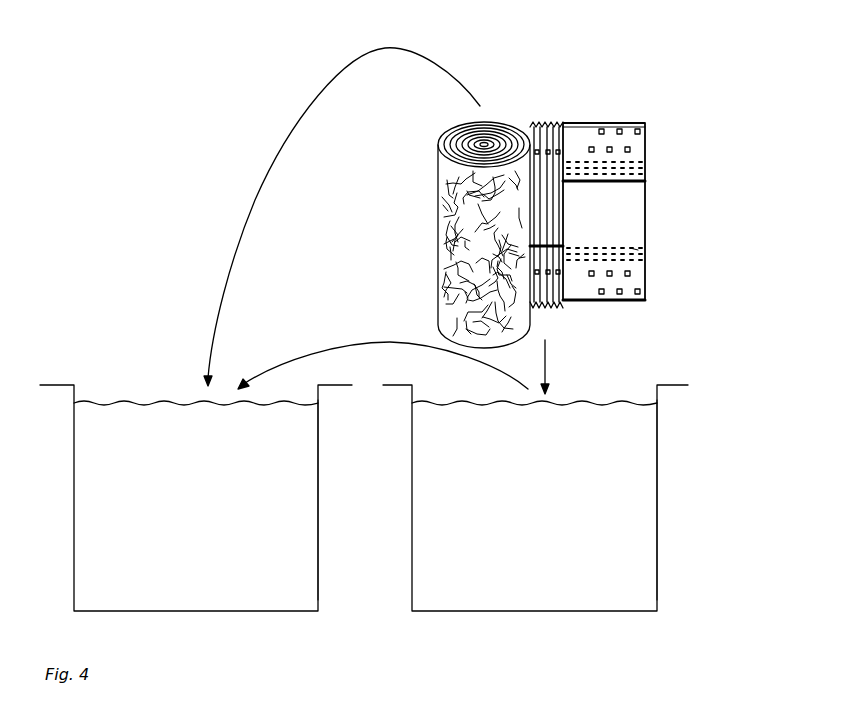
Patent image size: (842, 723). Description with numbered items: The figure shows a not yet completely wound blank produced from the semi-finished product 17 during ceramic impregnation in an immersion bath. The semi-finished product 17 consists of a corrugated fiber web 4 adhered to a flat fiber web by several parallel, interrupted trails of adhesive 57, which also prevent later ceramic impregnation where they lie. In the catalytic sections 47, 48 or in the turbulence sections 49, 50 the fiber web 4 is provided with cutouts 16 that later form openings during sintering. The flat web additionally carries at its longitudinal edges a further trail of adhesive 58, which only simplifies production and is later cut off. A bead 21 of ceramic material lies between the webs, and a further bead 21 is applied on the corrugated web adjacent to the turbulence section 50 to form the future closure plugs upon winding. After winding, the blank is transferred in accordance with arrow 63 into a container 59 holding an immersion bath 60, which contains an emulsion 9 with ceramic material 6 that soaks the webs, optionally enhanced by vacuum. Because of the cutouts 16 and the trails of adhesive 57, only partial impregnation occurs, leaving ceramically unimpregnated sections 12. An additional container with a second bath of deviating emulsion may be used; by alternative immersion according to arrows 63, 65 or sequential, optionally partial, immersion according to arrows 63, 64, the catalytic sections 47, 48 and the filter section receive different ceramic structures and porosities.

The ceramically unimpregnated sections 12 is at (537, 124).
The corrugated fiber web 4 is at (560, 120).
The cutouts 16 is at (534, 124).
The semi-finished product 17 is at (571, 112).
The catalytic section 47 is at (652, 142).
The catalytic section 48 is at (652, 289).
The turbulence section 49 is at (647, 155).
The turbulence section 50 is at (647, 275).
The interrupted trails of adhesive 57 is at (643, 182).
The further trail of adhesive 58 is at (622, 124).
The bead 21 is at (556, 244).
The arrow 63 is at (548, 364).
The arrow 64 is at (363, 340).
The arrow 65 is at (262, 168).
The ceramic material 6 is at (628, 558).
The emulsion 9 is at (624, 456).
The container 59 is at (658, 529).
The immersion bath 60 is at (534, 456).